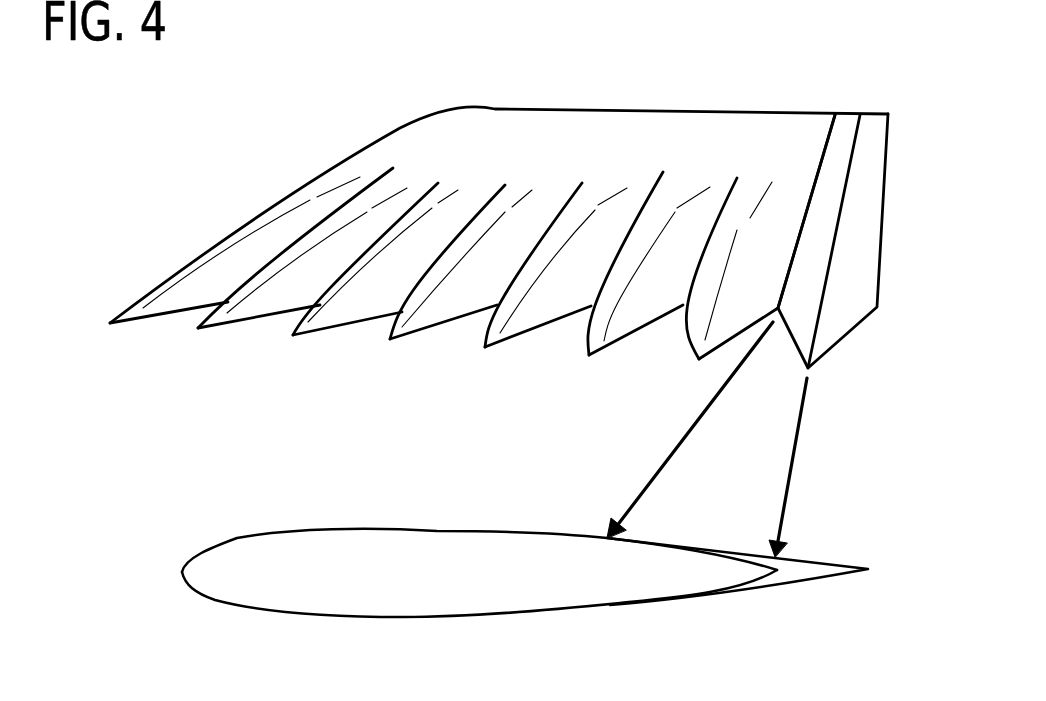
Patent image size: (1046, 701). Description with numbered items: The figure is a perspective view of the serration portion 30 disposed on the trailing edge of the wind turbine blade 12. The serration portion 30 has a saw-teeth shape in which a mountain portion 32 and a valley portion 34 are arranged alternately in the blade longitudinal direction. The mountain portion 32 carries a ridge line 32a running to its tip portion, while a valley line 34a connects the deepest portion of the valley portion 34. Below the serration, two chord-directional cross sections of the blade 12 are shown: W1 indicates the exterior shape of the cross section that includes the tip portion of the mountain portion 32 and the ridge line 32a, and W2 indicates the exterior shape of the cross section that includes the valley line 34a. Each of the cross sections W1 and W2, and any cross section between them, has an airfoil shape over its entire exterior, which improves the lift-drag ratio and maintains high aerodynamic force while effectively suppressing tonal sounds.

The wind turbine blade 12 is at (612, 108).
The serration portion 30 is at (451, 361).
The mountain portion 32 is at (837, 347).
The ridge line 32a is at (835, 223).
The valley portion 34 is at (775, 315).
The valley line 34a is at (807, 187).
The chord-directional cross section at mountain portion W1 is at (807, 560).
The chord-directional cross section at valley portion W2 is at (750, 560).